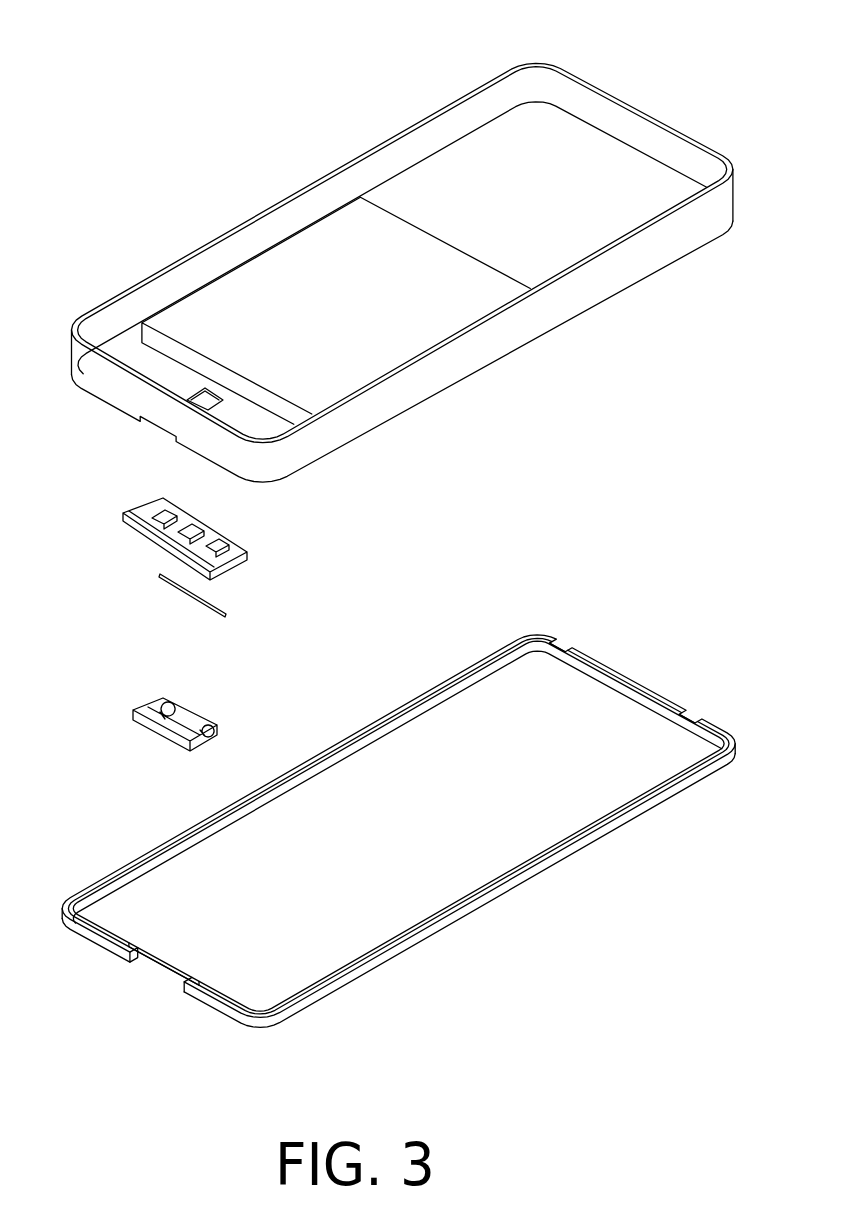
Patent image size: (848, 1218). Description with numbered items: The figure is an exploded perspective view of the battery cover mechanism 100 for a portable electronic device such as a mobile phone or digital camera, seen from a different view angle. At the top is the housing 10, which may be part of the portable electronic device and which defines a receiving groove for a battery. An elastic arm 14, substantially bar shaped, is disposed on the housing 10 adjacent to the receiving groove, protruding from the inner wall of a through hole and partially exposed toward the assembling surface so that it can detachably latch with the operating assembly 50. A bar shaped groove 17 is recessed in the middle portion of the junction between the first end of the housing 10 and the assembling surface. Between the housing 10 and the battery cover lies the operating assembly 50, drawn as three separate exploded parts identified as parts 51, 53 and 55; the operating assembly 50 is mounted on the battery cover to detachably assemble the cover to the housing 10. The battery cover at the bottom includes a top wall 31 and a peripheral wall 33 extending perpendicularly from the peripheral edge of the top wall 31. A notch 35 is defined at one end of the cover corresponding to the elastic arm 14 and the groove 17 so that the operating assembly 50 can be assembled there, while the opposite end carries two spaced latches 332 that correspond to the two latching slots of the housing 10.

The battery cover mechanism 100 is at (203, 66).
The housing 10 is at (219, 200).
The elastic arm 14 is at (203, 403).
The groove 17 is at (156, 426).
The operating assembly 50 is at (67, 540).
The base 51 is at (163, 718).
The pin 53 is at (177, 584).
The cover 55 is at (153, 540).
The top wall 31 is at (415, 773).
The peripheral wall 33 is at (498, 895).
The latches 332 is at (561, 647).
The notch 35 is at (177, 968).